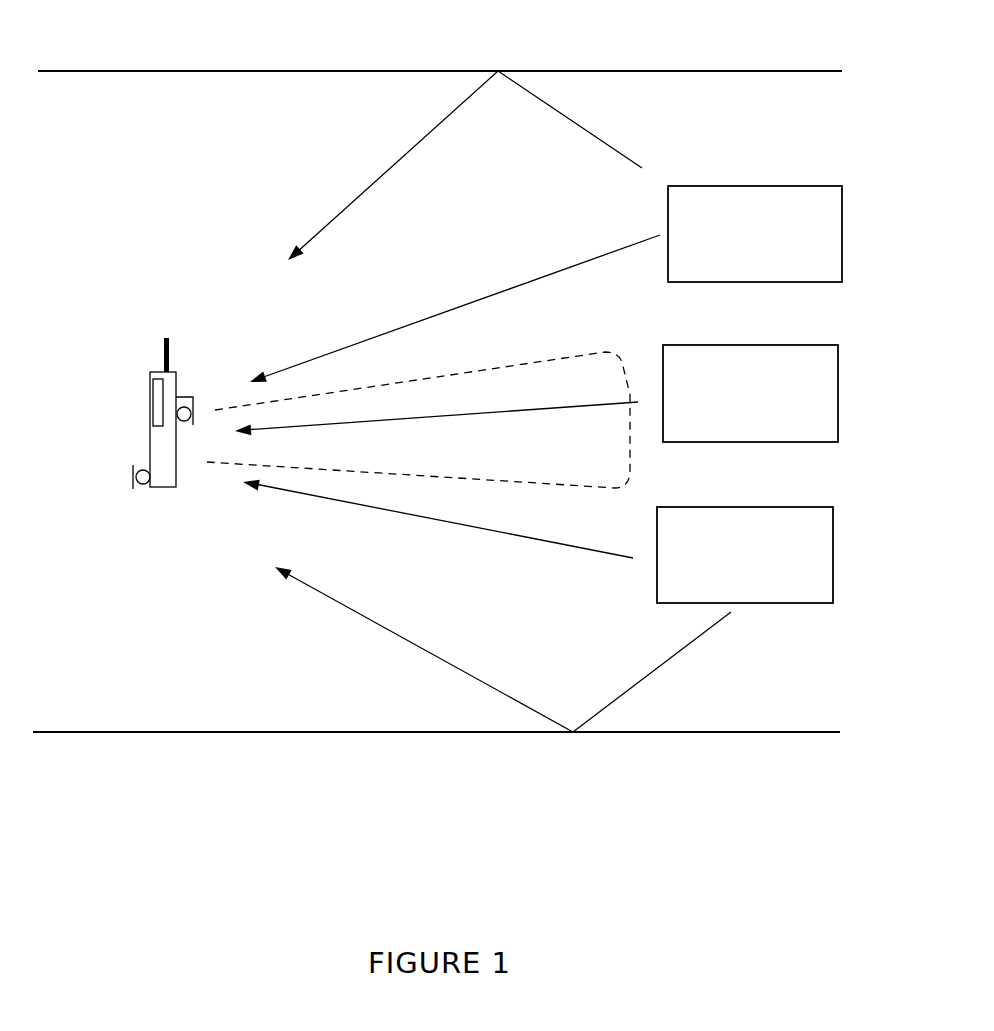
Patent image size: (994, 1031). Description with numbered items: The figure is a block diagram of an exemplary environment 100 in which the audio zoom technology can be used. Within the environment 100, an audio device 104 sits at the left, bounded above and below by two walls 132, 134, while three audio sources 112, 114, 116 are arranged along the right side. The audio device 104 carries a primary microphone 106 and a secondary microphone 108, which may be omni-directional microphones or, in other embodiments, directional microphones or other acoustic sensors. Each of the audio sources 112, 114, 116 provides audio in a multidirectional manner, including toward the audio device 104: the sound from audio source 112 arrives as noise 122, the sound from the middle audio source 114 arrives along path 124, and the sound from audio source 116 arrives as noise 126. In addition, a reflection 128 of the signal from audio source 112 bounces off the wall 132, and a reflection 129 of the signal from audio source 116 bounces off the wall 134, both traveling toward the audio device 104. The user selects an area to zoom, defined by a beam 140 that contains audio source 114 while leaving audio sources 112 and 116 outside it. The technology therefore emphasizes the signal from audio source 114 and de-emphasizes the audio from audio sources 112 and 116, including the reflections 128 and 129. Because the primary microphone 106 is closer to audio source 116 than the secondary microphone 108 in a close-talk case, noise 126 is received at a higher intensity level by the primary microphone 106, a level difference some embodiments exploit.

The environment 100 is at (190, 50).
The audio device 104 is at (148, 390).
The primary microphone 106 is at (135, 487).
The secondary microphone 108 is at (193, 398).
The audio source 112 is at (755, 234).
The audio source 114 is at (750, 393).
The audio source 116 is at (745, 555).
The noise 122 is at (402, 328).
The acoustic signal from audio source 114 124 is at (410, 418).
The noise 126 is at (390, 510).
The reflection 128 is at (577, 127).
The reflection 129 is at (672, 657).
The wall 132 is at (728, 71).
The wall 134 is at (723, 732).
The beam 140 is at (548, 358).